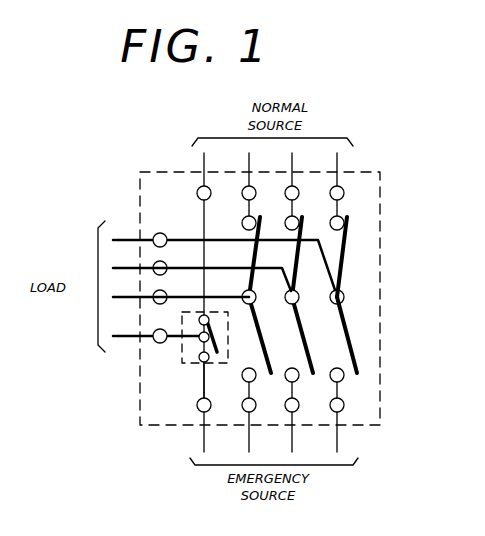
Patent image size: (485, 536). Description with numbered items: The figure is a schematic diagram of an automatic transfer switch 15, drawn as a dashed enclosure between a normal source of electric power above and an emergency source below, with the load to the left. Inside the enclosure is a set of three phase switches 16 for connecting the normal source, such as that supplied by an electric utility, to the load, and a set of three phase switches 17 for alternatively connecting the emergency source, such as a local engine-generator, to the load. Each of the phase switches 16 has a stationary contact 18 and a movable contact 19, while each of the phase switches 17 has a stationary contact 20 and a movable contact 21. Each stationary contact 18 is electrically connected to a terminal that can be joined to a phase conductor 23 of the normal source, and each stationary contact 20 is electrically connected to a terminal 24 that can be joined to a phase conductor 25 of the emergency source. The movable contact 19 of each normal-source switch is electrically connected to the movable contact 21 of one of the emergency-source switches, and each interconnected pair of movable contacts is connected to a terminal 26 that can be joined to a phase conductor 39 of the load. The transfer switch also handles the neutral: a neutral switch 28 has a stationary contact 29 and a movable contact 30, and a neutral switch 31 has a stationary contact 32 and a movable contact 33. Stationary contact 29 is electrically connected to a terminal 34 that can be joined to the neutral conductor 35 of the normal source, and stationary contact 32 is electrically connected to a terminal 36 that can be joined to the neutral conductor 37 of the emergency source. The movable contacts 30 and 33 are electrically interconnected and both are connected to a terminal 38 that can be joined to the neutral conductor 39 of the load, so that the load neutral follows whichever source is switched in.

The automatic transfer switch 15 is at (367, 242).
The phase switches 16 is at (358, 213).
The phase switches 17 is at (362, 373).
The stationary contact 18 is at (344, 190).
The movable contact 19 is at (344, 257).
The stationary contact 20 is at (344, 378).
The movable contact 21 is at (345, 330).
The phase conductor of the normal source 23 is at (340, 163).
The terminal 24 is at (343, 408).
The phase conductor of the emergency source 25 is at (337, 437).
The terminal 26 is at (154, 236).
The neutral switch 28 is at (215, 308).
The stationary contact 29 is at (199, 319).
The movable contact 30 is at (209, 335).
The neutral switch 31 is at (216, 368).
The stationary contact 32 is at (200, 361).
The movable contact 33 is at (209, 355).
The terminal 34 is at (198, 188).
The neutral conductor of the normal source 35 is at (203, 163).
The terminal 36 is at (198, 408).
The neutral conductor of the emergency source 37 is at (203, 442).
The terminal 38 is at (155, 341).
The conductor of the load 39 is at (120, 296).